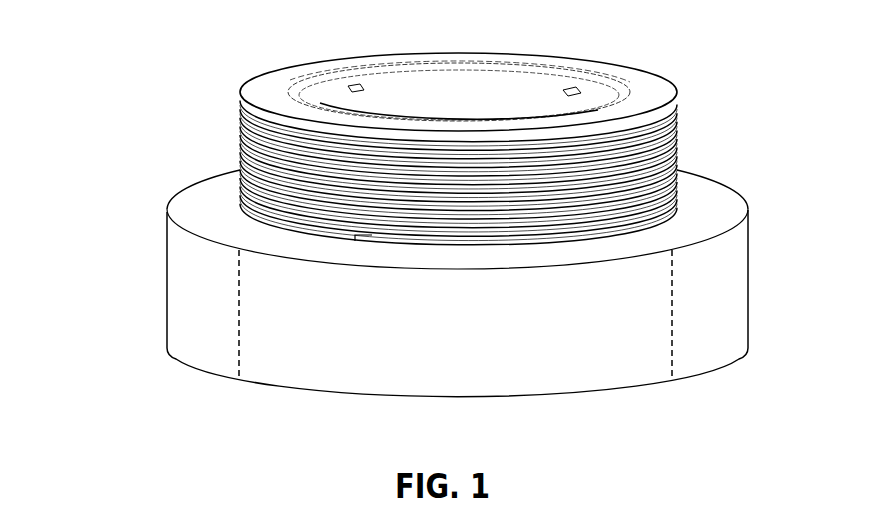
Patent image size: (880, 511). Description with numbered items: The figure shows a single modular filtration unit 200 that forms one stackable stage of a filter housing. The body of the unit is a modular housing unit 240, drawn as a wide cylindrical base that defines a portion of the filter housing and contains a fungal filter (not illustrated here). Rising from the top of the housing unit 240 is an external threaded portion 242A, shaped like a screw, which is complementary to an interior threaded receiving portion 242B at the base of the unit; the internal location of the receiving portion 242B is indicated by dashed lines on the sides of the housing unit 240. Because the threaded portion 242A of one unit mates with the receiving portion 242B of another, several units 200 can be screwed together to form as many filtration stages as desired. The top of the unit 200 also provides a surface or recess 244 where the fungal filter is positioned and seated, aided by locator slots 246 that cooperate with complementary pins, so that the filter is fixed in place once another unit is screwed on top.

The modular filtration unit 200 is at (132, 263).
The modular housing unit 240 is at (750, 273).
The threaded portion 242A is at (680, 133).
The interior threaded receiving portion 242B is at (238, 353).
The surface or recess 244 is at (323, 90).
The locator slots 246 is at (574, 88).